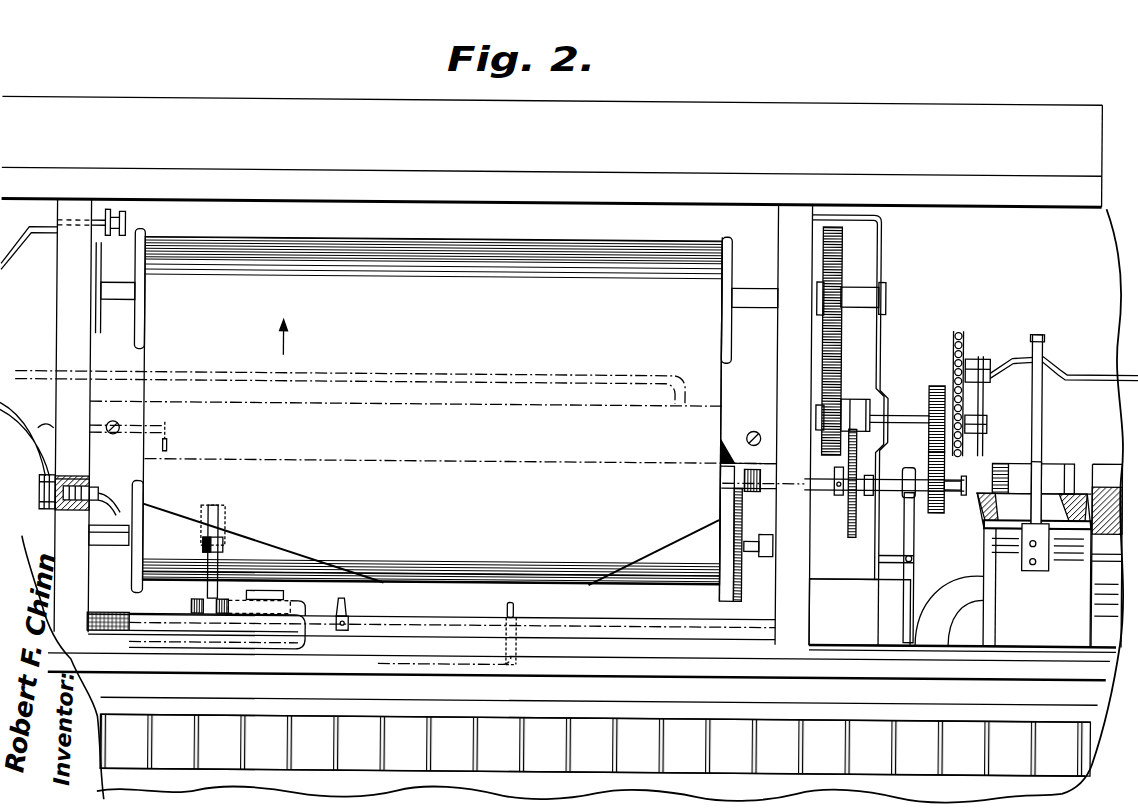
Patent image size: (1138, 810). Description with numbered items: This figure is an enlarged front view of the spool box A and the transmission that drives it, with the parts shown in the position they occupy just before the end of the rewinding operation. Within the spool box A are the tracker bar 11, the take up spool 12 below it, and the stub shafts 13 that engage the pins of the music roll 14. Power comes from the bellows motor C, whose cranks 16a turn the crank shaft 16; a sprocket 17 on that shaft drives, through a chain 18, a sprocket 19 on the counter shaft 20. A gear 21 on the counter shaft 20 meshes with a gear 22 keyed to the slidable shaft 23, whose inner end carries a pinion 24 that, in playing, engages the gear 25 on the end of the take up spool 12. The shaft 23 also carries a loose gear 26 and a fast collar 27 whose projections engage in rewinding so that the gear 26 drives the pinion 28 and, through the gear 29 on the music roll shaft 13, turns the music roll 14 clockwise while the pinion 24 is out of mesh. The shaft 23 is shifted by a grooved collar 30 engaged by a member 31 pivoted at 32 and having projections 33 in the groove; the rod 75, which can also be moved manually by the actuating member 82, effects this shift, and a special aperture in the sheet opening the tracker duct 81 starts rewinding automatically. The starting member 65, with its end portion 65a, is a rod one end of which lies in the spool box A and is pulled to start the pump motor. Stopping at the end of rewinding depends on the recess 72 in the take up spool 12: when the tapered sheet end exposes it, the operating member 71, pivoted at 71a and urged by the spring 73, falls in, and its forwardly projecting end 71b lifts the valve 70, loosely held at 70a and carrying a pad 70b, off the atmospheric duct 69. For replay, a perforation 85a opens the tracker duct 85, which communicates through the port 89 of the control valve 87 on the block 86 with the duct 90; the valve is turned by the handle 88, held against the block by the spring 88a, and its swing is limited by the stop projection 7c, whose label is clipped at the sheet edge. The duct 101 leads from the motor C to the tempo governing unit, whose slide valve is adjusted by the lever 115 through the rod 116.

The stop projection 7c is at (38, 503).
The tracker bar 11 is at (575, 466).
The take up spool 12 is at (628, 586).
The stub shaft 13 is at (120, 286).
The music roll 14 is at (650, 242).
The crank shaft 16 is at (1068, 372).
The cranks 16a is at (1030, 360).
The sprocket 17 is at (958, 330).
The chain 18 is at (965, 394).
The sprocket 19 is at (965, 437).
The counter shaft 20 is at (896, 420).
The gear 21 is at (934, 382).
The gear 22 is at (940, 508).
The slidably mounted shaft 23 is at (812, 500).
The pinion 24 is at (752, 445).
The gear 25 is at (742, 598).
The gear 26 is at (851, 534).
The collar 27 is at (826, 512).
The pinion 28 is at (856, 395).
The gear 29 is at (841, 270).
The grooved collar 30 is at (905, 502).
The member 31 is at (912, 590).
The pivot 32 is at (916, 556).
The projections 33 is at (959, 474).
The starting member 65 is at (46, 233).
The knob 65a is at (126, 222).
The atmospheric duct 69 is at (306, 614).
The valve 70 is at (268, 594).
The loose holding point of valve 70a is at (292, 596).
The pad 70b is at (262, 592).
The operating member 71 is at (222, 572).
The pivot 71a is at (192, 607).
The forwardly projecting end 71b is at (218, 606).
The recess 72 is at (202, 546).
The spring 73 is at (222, 616).
The rod 75 is at (440, 630).
The tracker duct 81 is at (368, 373).
The actuating member 82 is at (358, 609).
The tracker duct 85 is at (127, 406).
The special perforation 85a is at (170, 450).
The member 86 is at (54, 518).
The control valve 87 is at (42, 440).
The handle 88 is at (112, 500).
The spring 88a is at (72, 484).
The port 89 is at (38, 482).
The duct 90 is at (12, 425).
The duct 101 is at (985, 628).
The lever 115 is at (516, 610).
The rod 116 is at (460, 698).
The spool box A is at (762, 382).
The motor C is at (1098, 472).